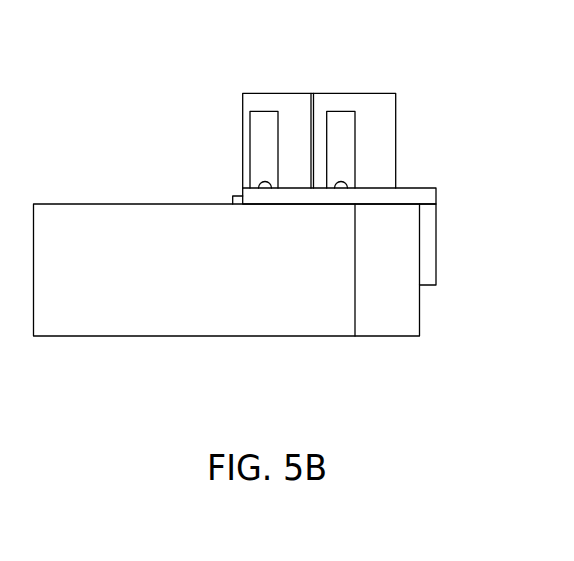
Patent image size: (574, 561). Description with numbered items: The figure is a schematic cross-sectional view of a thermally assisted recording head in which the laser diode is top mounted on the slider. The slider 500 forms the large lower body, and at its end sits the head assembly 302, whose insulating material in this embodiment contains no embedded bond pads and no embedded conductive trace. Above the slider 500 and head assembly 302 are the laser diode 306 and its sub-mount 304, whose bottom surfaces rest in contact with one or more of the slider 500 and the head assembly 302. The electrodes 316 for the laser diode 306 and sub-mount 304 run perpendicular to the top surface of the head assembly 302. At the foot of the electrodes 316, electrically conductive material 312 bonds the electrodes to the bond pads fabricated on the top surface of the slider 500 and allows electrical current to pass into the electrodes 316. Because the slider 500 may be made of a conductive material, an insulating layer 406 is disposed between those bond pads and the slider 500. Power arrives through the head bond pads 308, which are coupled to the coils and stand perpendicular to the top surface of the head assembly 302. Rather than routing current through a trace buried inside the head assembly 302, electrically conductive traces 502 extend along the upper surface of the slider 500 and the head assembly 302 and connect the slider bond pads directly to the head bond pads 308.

The head assembly 302 is at (400, 323).
The sub-mount 304 is at (299, 107).
The laser diode 306 is at (385, 113).
The head bond pads 308 is at (429, 258).
The electrically conductive material 312 is at (265, 181).
The electrodes 316 is at (262, 123).
The insulating layer 406 is at (237, 196).
The slider 500 is at (75, 227).
The electrically conductive traces 502 is at (421, 195).